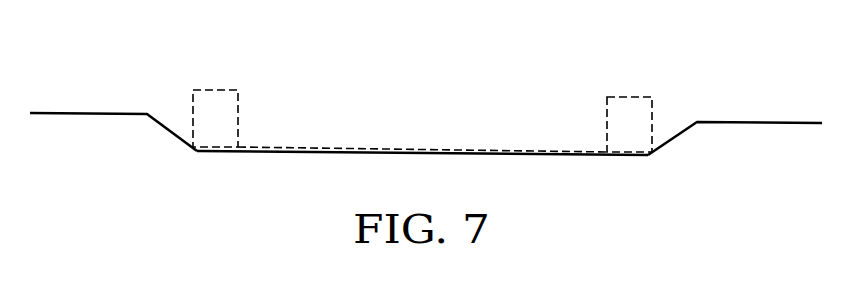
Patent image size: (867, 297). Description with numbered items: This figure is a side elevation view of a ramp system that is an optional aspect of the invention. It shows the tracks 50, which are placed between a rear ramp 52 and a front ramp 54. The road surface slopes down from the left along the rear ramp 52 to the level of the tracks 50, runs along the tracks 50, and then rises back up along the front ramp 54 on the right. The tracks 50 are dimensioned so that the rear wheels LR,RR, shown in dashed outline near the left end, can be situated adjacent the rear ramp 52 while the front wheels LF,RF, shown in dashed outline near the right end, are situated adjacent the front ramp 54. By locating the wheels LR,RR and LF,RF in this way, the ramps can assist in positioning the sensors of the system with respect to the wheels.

The tracks 50 is at (357, 140).
The rear ramp 52 is at (153, 113).
The front ramp 54 is at (676, 137).
The rear wheels LR,RR is at (228, 102).
The front wheels LF,RF is at (634, 100).